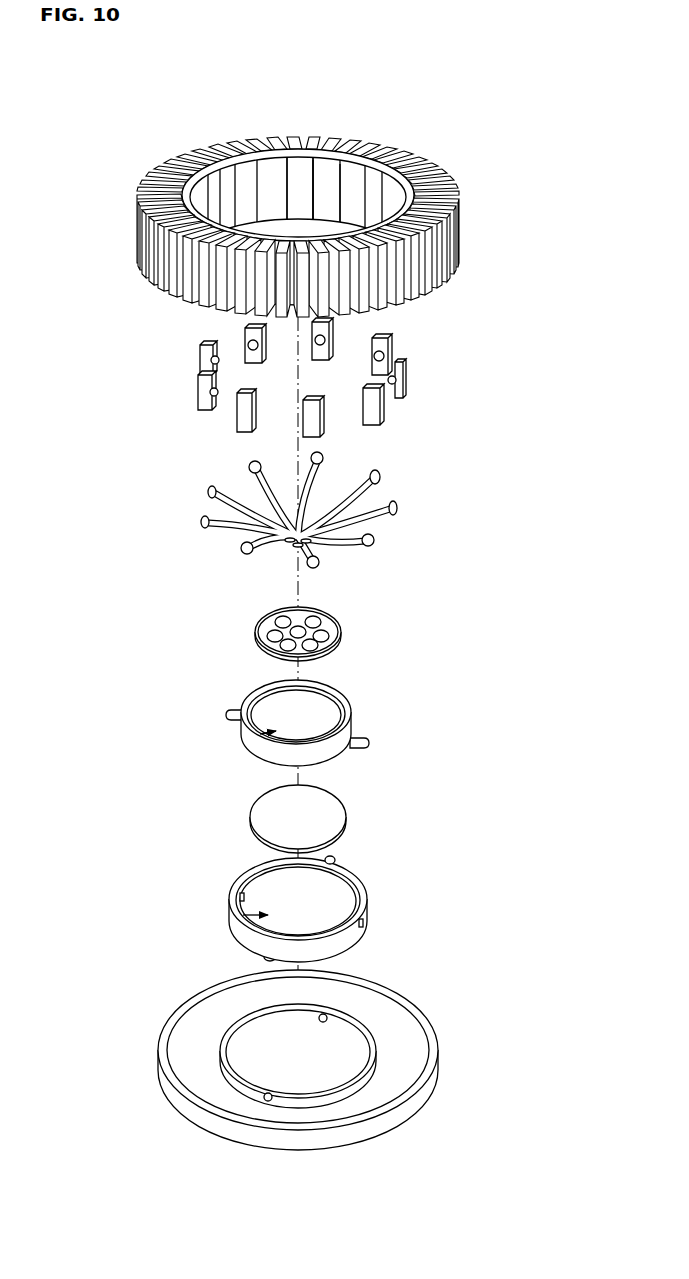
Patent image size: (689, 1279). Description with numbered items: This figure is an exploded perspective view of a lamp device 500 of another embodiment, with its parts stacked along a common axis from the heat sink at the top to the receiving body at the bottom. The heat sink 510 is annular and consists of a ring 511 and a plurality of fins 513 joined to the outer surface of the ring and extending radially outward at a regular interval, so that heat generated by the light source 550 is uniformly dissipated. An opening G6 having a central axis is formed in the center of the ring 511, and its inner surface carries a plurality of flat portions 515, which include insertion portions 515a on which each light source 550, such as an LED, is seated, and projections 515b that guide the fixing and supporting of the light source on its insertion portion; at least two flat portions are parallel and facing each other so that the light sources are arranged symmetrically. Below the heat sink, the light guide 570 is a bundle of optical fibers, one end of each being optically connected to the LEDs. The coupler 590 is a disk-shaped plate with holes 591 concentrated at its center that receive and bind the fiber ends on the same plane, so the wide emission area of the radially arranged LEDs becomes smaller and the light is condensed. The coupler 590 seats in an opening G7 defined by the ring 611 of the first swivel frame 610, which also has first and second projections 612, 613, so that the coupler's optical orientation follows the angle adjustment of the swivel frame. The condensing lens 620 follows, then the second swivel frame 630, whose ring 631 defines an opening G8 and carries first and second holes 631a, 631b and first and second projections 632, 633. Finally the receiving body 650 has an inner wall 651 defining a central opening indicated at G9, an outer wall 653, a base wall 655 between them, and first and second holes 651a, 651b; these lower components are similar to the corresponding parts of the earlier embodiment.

The lamp device 500 is at (85, 131).
The heat sink 510 is at (492, 143).
The ring 511 is at (399, 193).
The fins 513 is at (455, 212).
The flat portions 515 is at (391, 90).
The insertion portions 515a is at (303, 170).
The projections 515b is at (331, 178).
The light source 550 is at (403, 380).
The light guide 570 is at (378, 502).
The coupler 590 is at (340, 622).
The holes 591 is at (318, 635).
The first swivel frame 610 is at (417, 675).
The ring 611 is at (344, 711).
The first projection 612 is at (360, 740).
The second projection 613 is at (322, 688).
The condensing lens 620 is at (347, 812).
The second swivel frame 630 is at (437, 855).
The ring 631 is at (366, 900).
The first hole 631a is at (364, 923).
The second hole 631b is at (268, 880).
The first projection 632 is at (333, 861).
The second projection 633 is at (282, 950).
The receiving body 650 is at (503, 975).
The inner wall 651 is at (372, 1040).
The first hole 651a is at (275, 1098).
The second hole 651b is at (327, 1016).
The outer wall 653 is at (427, 1085).
The base wall 655 is at (410, 1055).
The opening G6 is at (236, 194).
The opening G7 is at (250, 736).
The opening G8 is at (235, 918).
The gap G9 is at (245, 1048).